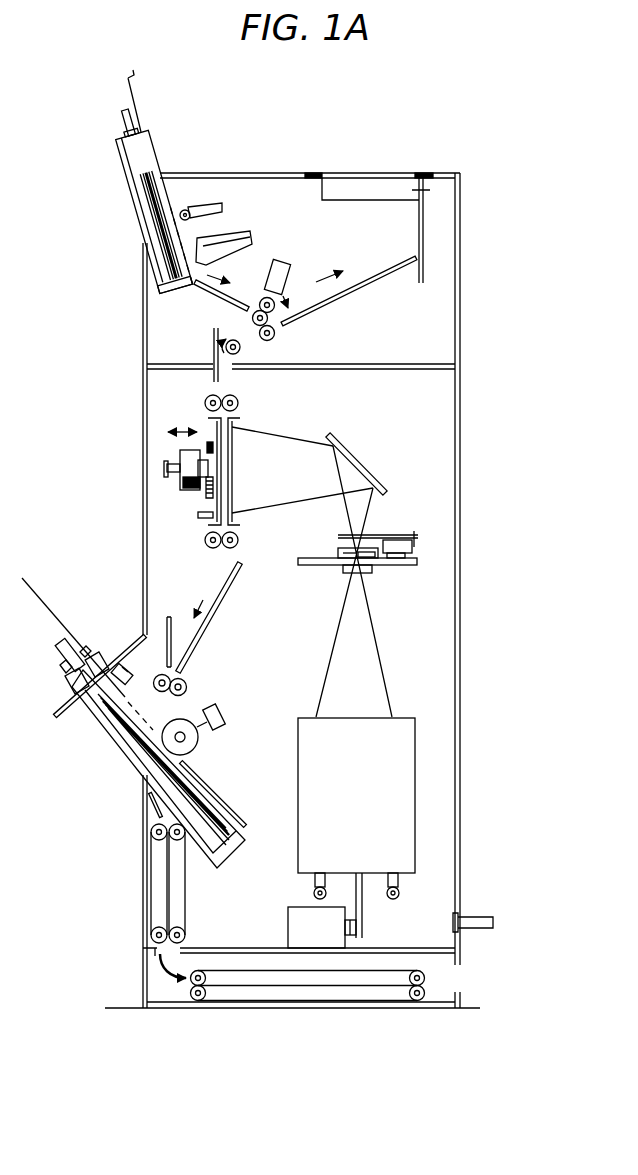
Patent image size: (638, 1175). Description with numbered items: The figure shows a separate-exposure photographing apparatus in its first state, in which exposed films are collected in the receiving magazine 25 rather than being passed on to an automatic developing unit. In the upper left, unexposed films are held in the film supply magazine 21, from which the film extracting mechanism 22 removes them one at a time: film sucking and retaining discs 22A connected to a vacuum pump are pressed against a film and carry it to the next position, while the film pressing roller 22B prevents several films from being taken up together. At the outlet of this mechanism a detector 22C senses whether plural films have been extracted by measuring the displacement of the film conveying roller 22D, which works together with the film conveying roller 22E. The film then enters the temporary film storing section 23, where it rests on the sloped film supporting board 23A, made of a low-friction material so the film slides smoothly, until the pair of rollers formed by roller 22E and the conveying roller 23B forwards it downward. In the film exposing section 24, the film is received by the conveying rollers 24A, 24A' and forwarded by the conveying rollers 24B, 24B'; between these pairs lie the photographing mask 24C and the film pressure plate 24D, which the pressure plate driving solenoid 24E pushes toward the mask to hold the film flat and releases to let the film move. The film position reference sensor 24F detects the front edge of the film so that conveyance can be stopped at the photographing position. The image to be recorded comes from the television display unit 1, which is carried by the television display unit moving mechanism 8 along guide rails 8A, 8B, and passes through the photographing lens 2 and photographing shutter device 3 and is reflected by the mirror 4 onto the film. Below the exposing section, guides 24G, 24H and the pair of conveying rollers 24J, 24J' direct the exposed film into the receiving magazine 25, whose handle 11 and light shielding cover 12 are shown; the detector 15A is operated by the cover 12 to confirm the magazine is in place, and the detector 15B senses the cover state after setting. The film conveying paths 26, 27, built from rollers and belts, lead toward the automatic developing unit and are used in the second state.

The television display unit 1 is at (416, 766).
The photographing lens 2 is at (362, 557).
The photographing shutter device 3 is at (405, 536).
The mirror 4 is at (369, 476).
The television display unit moving mechanism 8 is at (376, 931).
The guide rail 8A is at (313, 893).
The guide rail 8B is at (400, 893).
The handle 11 is at (62, 652).
The light shielding cover 12 is at (97, 657).
The detector 15A is at (127, 675).
The detector 15B is at (226, 718).
The film supply magazine 21 is at (124, 188).
The film extracting mechanism 22 is at (247, 218).
The film sucking and retaining discs 22A is at (224, 241).
The film pressing roller 22B is at (186, 210).
The detector 22C is at (286, 267).
The film conveying roller 22D is at (262, 298).
The film conveying roller 22E is at (252, 318).
The temporary film storing section 23 is at (351, 295).
The sloped film supporting board 23A is at (387, 270).
The conveying roller 23B is at (274, 338).
The film exposing section 24 is at (137, 480).
The conveying roller 24A is at (187, 395).
The conveying roller 24A' is at (259, 395).
The conveying roller 24B is at (205, 559).
The conveying roller 24B' is at (262, 541).
The photographing mask 24C is at (239, 456).
The film pressure plate 24D is at (209, 425).
The pressure plate driving solenoid 24E is at (185, 485).
The film position reference sensor 24F is at (200, 516).
The guide 24G is at (209, 627).
The guide 24H is at (168, 618).
The conveying roller 24J is at (162, 697).
The conveying roller 24J' is at (206, 688).
The receiving magazine 25 is at (93, 738).
The film conveying path 26 is at (138, 905).
The film conveying path 27 is at (300, 1014).